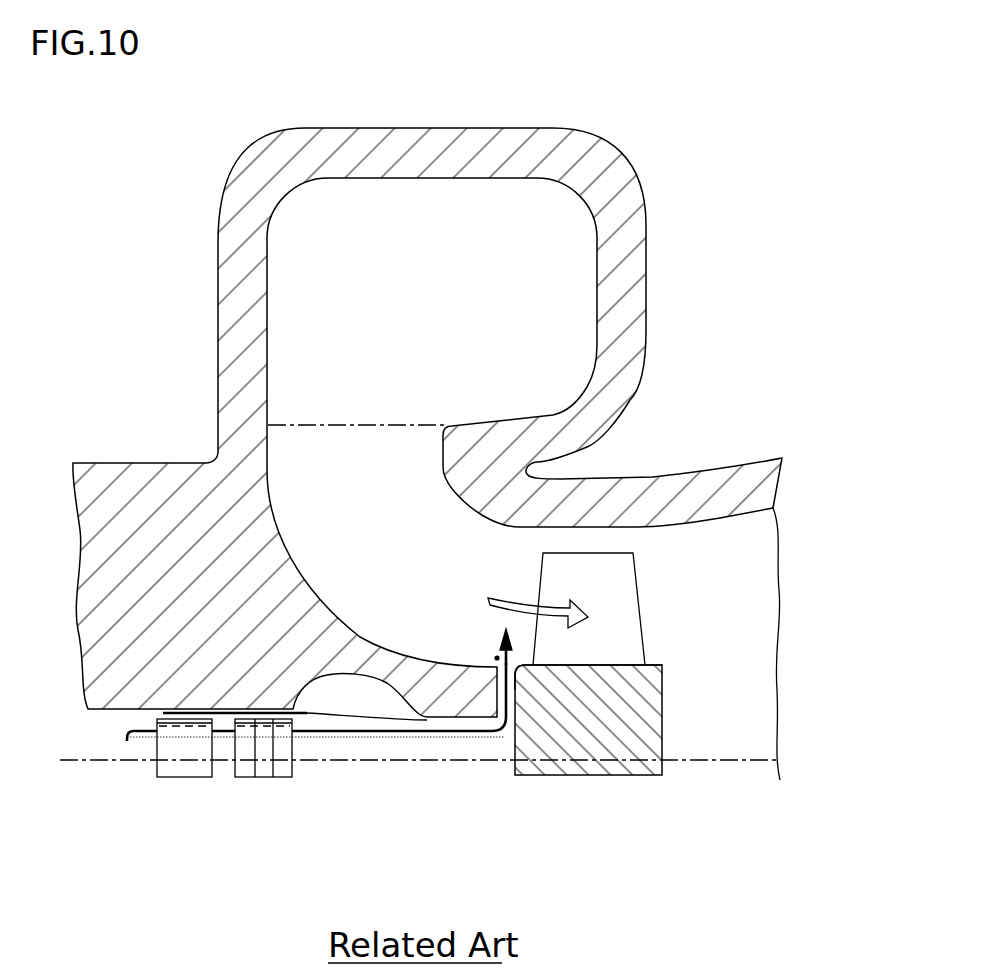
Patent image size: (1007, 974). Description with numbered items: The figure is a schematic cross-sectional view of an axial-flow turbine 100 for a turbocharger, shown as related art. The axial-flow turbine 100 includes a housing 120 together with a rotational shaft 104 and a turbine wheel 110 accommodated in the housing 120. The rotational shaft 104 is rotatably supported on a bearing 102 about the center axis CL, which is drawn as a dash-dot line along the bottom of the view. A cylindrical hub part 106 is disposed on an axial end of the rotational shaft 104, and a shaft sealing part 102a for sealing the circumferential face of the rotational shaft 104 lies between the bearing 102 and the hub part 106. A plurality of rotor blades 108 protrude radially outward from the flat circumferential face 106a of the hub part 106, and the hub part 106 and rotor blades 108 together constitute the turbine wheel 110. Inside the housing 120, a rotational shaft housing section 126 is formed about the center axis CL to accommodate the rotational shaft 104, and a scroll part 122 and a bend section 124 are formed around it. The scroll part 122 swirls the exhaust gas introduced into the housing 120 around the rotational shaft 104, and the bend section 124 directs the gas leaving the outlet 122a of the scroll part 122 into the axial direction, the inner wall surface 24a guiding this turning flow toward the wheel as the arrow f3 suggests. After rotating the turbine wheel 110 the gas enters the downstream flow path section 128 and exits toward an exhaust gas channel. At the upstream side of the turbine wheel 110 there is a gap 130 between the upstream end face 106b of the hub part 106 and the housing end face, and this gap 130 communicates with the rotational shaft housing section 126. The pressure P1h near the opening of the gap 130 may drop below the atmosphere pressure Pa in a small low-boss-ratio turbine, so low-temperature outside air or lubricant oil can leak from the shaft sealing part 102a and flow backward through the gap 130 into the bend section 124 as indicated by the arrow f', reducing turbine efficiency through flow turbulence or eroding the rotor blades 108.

The axial-flow turbine 100 is at (170, 153).
The housing 120 is at (680, 285).
The scroll part 122 is at (445, 306).
The outlet of the scroll part 122a is at (440, 427).
The bend section 124 is at (416, 538).
The inner curved surface 24a is at (396, 643).
The rotational shaft housing section 126 is at (323, 705).
The downstream flow path section 128 is at (760, 643).
The turbine wheel 110 is at (678, 680).
The rotor blades 108 is at (630, 597).
The hub part 106 is at (592, 747).
The flat circumferential face of the hub part 106a is at (623, 665).
The upstream end face of the hub part 106b is at (517, 676).
The rotational shaft 104 is at (405, 750).
The gap 130 is at (508, 733).
The bearing 102 is at (178, 752).
The shaft sealing part 102a is at (265, 752).
The pressure in the vicinity of the inner circumferential face on the upstream side P1h is at (495, 657).
The flow f3 is at (515, 602).
The atmosphere pressure Pa is at (130, 797).
The arrow indicating backward flow f' is at (315, 754).
The center axis CL is at (725, 763).